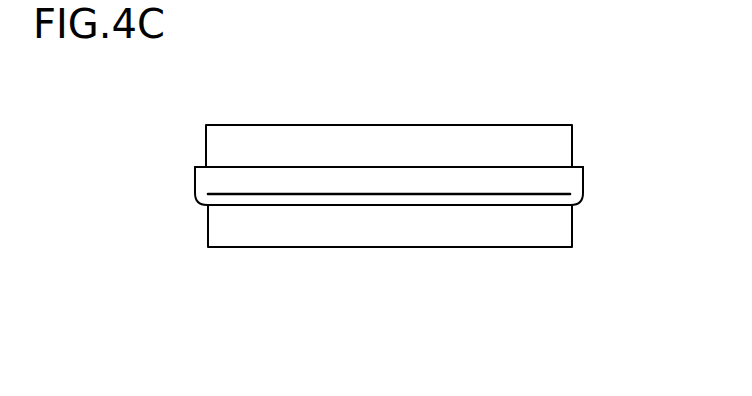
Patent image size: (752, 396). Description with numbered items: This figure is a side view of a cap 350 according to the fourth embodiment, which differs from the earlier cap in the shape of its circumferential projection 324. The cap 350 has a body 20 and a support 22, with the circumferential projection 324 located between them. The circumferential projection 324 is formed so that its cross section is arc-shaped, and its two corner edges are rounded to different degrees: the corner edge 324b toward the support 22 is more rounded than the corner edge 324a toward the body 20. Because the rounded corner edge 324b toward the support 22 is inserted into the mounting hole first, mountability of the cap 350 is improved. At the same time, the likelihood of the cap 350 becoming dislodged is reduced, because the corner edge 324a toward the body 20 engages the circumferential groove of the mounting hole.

The body 20 is at (515, 145).
The support 22 is at (562, 240).
The circumferential projection 324 is at (267, 183).
The corner edge toward the body 324a is at (575, 167).
The corner edge toward the support 324b is at (580, 200).
The cap 350 is at (370, 288).